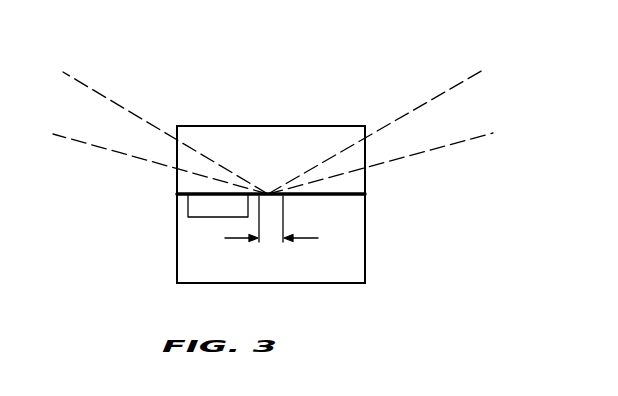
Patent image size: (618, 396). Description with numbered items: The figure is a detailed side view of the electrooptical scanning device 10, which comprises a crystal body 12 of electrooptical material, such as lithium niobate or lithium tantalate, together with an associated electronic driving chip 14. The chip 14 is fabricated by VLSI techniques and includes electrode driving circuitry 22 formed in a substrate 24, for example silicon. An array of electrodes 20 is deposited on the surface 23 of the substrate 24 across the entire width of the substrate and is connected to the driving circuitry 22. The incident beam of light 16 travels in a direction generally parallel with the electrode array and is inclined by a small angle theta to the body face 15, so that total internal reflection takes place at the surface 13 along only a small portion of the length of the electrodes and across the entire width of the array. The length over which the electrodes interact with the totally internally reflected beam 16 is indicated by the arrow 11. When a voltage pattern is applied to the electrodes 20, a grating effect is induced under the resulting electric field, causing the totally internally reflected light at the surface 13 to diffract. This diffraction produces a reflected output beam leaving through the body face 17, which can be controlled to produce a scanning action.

The electrooptical scanning device 10 is at (290, 114).
The arrow 11 is at (283, 239).
The crystal body 12 is at (232, 133).
The surface 13 is at (357, 201).
The electronic driving chip 14 is at (185, 251).
The body face 15 is at (176, 156).
The incident beam of light 16 is at (90, 117).
The body face 17 is at (368, 178).
The electrodes 20 is at (298, 199).
The electrode driving circuitry 22 is at (210, 211).
The surface 23 is at (188, 194).
The substrate 24 is at (358, 264).